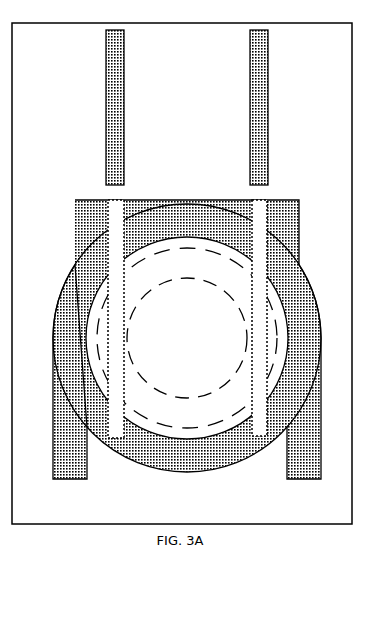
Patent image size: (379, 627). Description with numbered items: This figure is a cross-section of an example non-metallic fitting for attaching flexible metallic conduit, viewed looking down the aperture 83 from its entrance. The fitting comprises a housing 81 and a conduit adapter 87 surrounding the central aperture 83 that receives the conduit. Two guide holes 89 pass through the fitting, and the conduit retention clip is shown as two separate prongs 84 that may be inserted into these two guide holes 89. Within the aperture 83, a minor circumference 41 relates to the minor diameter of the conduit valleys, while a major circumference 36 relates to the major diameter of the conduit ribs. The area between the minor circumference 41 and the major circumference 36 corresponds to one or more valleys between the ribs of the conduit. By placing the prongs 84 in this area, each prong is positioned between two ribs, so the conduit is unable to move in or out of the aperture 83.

The housing 81 is at (87, 232).
The aperture 83 is at (178, 348).
The prongs 84 is at (187, 107).
The conduit adapter 87 is at (216, 267).
The guide holes 89 is at (117, 233).
The major circumference 36 is at (163, 430).
The minor circumference 41 is at (187, 403).